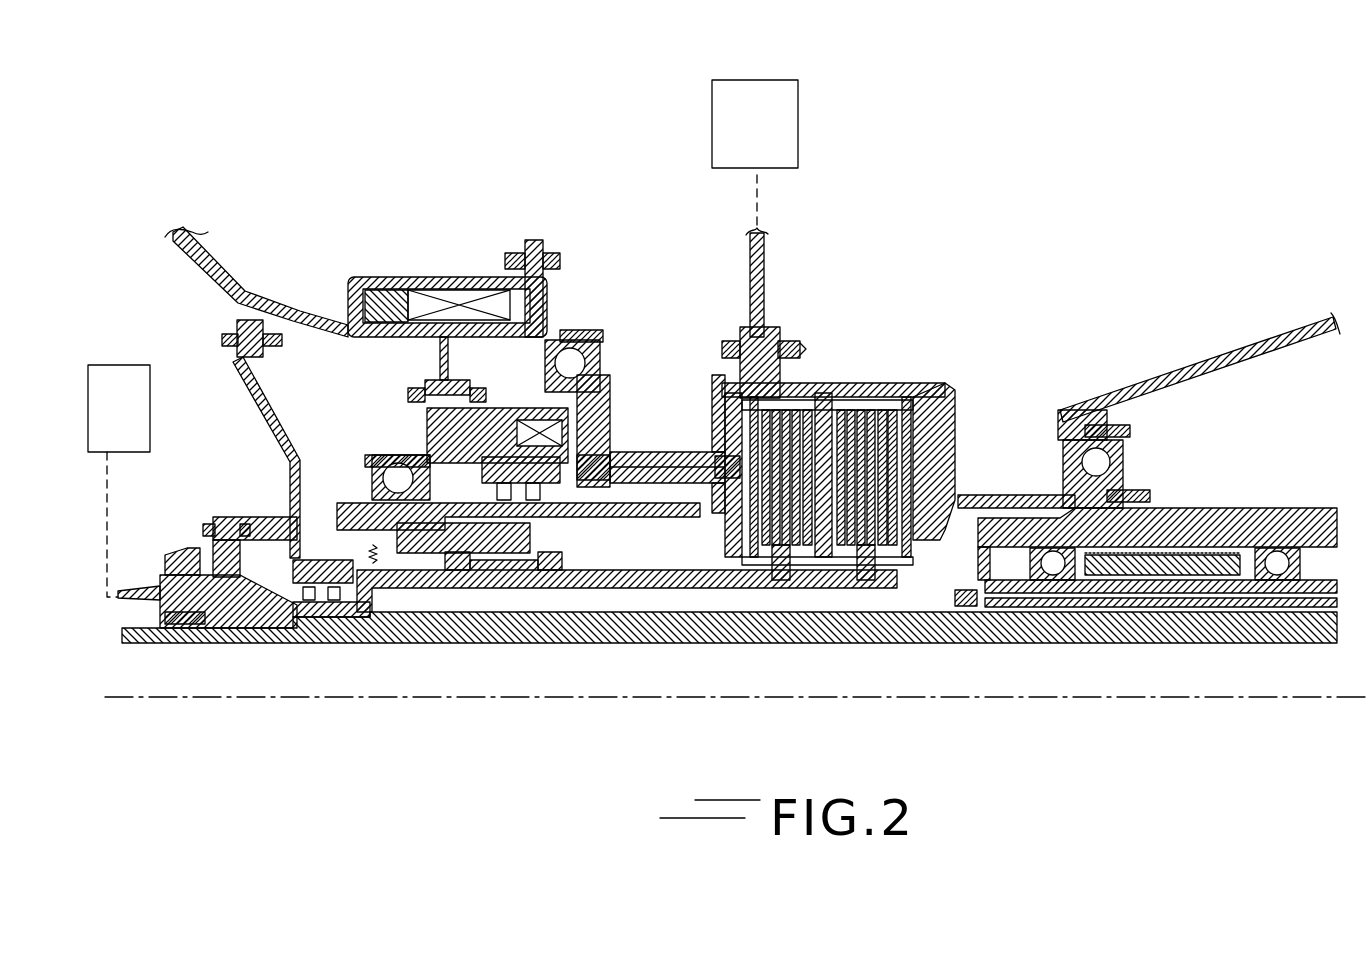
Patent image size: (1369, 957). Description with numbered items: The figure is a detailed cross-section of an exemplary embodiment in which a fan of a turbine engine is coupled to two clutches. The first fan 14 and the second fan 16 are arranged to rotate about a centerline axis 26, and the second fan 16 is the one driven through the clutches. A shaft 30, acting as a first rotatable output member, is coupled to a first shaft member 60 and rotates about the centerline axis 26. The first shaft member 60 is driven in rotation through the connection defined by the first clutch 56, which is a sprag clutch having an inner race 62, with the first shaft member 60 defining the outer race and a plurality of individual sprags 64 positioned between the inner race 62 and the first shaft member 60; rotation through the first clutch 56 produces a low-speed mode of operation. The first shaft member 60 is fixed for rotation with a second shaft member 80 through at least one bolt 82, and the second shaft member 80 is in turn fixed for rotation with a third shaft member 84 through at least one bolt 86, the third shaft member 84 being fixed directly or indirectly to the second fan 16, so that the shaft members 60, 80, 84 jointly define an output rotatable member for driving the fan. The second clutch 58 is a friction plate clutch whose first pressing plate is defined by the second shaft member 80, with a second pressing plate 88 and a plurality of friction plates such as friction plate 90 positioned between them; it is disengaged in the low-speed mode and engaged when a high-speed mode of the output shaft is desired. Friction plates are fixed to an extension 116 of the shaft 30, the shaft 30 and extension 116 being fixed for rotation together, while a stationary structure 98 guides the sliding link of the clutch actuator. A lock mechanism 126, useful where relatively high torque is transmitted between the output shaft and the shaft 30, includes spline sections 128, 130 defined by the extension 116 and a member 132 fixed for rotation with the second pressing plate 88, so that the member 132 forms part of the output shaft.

The first fan 14 is at (120, 380).
The second fan 16 is at (790, 130).
The centerline axis 26 is at (1103, 702).
The shaft 30 is at (993, 644).
The first clutch 56 is at (1146, 669).
The second clutch 58 is at (819, 434).
The first shaft member 60 is at (1255, 510).
The inner race 62 is at (1310, 596).
The sprags 64 is at (1217, 598).
The second shaft member 80 is at (940, 428).
The bolt 82 is at (1147, 495).
The third shaft member 84 is at (765, 272).
The bolt 86 is at (775, 345).
The second pressing plate 88 is at (725, 535).
The friction plate 90 is at (767, 560).
The stationary structure 98 is at (228, 268).
The extension 116 is at (838, 592).
The lock mechanism 126 is at (548, 537).
The spline section 128 is at (452, 572).
The spline section 130 is at (550, 572).
The member 132 is at (712, 382).